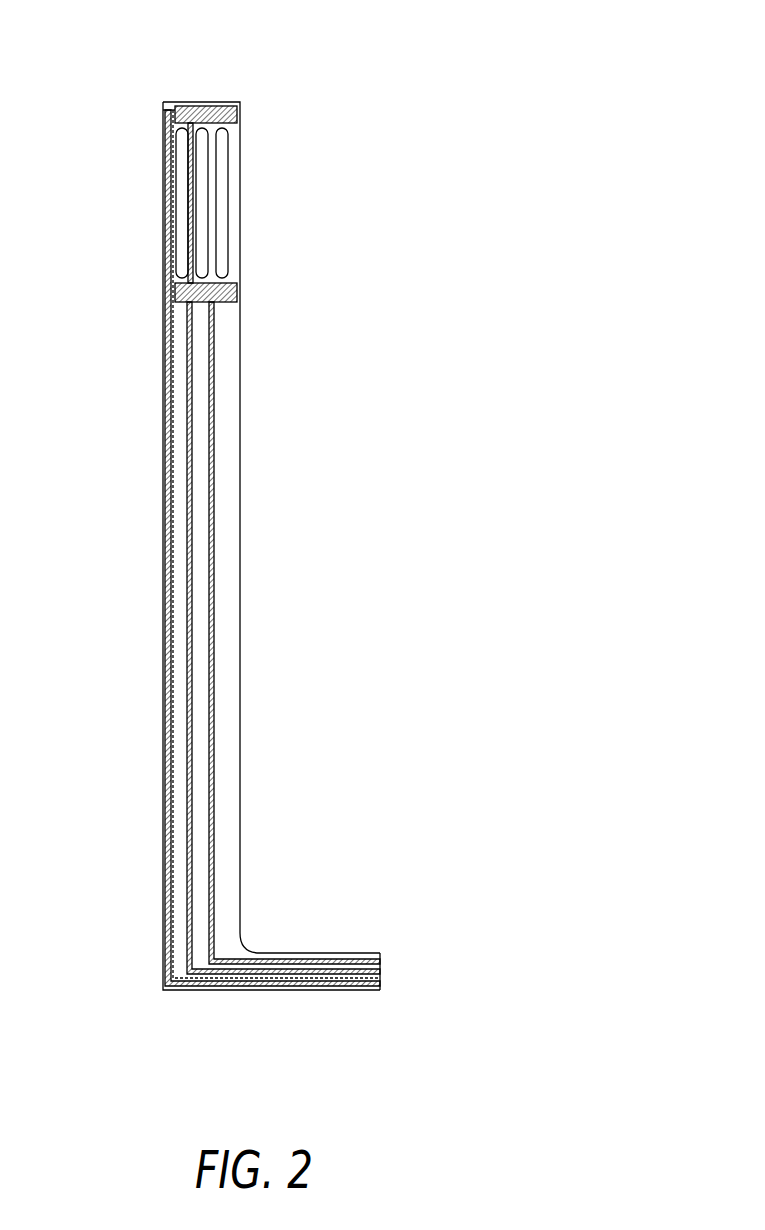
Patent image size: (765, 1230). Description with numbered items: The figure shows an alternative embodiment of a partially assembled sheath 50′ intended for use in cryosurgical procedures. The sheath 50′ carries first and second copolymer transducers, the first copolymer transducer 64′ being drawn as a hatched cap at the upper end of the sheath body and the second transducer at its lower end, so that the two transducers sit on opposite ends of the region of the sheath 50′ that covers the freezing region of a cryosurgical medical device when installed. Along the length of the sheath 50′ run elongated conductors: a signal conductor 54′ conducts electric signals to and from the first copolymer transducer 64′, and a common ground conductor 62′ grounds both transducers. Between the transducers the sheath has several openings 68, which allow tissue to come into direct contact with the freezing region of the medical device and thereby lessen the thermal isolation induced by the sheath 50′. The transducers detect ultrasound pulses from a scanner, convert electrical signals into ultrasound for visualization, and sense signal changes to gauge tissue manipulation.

The partially assembled sheath 50′ is at (293, 82).
The signal conductor 54′ is at (167, 363).
The common ground conductor 62′ is at (192, 437).
The first copolymer transducer 64′ is at (198, 120).
The openings 68 is at (222, 202).